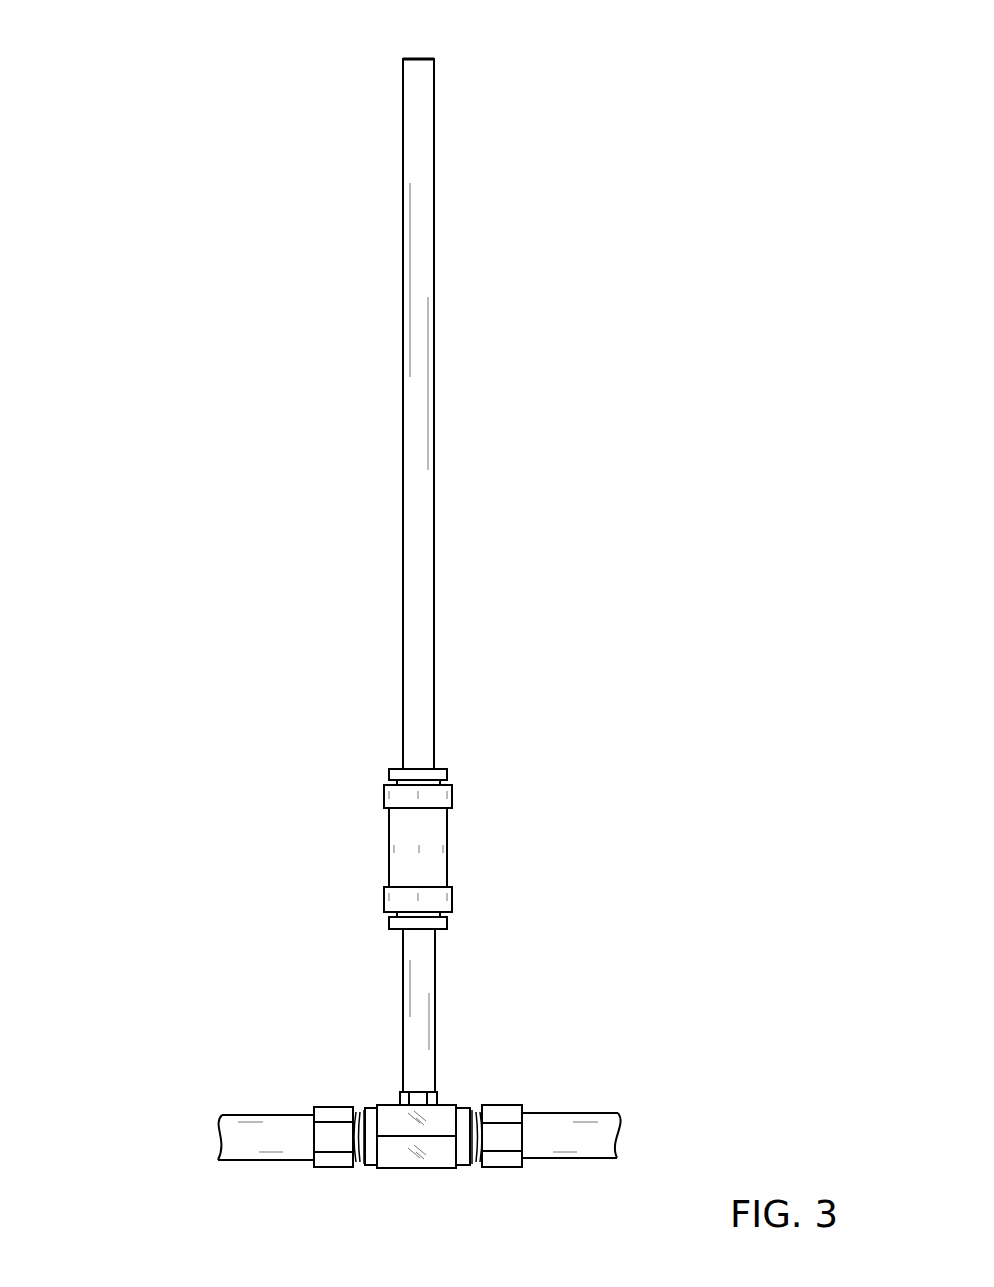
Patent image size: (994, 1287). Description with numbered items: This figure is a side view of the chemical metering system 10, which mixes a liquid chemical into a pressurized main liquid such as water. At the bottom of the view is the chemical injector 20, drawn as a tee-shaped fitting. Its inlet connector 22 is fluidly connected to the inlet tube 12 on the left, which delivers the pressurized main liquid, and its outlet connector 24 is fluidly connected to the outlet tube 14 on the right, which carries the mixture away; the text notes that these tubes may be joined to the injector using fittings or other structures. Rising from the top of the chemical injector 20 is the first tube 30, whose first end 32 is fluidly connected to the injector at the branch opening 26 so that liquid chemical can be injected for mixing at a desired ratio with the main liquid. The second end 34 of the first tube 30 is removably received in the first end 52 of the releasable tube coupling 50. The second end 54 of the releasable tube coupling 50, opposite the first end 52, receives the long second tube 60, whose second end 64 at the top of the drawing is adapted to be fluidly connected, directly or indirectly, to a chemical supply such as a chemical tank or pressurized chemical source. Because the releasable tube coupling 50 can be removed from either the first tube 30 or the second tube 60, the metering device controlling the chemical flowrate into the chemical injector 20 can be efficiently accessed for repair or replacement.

The chemical metering system 10 is at (198, 190).
The inlet tube 12 is at (243, 1115).
The outlet tube 14 is at (582, 1113).
The chemical injector 20 is at (395, 1178).
The inlet connector 22 is at (358, 1166).
The outlet connector 24 is at (477, 1166).
The branch outlet of tee fitting 26 is at (440, 1097).
The first tube 30 is at (403, 1010).
The first end of first tube 32 is at (401, 1089).
The second end of first tube 34 is at (397, 933).
The releasable tube coupling 50 is at (468, 832).
The first end of releasable tube coupling 52 is at (441, 929).
The second end of releasable tube coupling 54 is at (444, 768).
The second tube 60 is at (403, 413).
The second end of second tube 64 is at (419, 58).